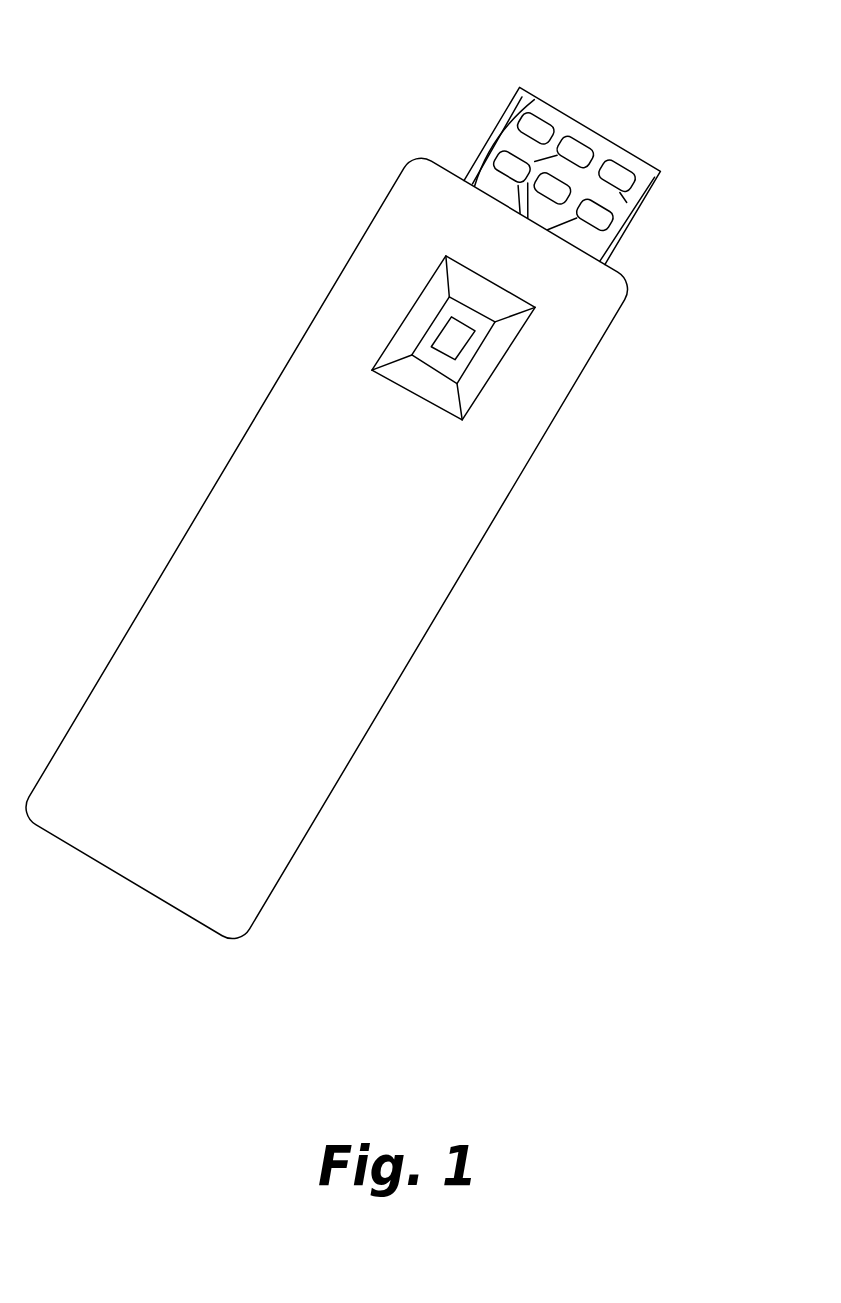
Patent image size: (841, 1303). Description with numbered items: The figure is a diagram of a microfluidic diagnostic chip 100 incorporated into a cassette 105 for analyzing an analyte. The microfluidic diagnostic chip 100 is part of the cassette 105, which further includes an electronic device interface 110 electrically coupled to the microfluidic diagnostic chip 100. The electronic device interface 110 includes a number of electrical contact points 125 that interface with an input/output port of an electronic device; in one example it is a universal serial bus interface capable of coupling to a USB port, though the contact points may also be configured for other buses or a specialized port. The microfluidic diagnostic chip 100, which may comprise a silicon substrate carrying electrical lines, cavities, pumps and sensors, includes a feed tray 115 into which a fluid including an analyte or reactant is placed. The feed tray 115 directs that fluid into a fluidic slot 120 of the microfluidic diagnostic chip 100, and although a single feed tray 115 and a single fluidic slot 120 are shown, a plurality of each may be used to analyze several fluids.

The microfluidic diagnostic chip 100 is at (487, 73).
The cassette 105 is at (715, 692).
The electronic device interface 110 is at (452, 47).
The feed tray 115 is at (430, 358).
The fluidic slot 120 is at (458, 332).
The electrical contact points 125 is at (530, 127).